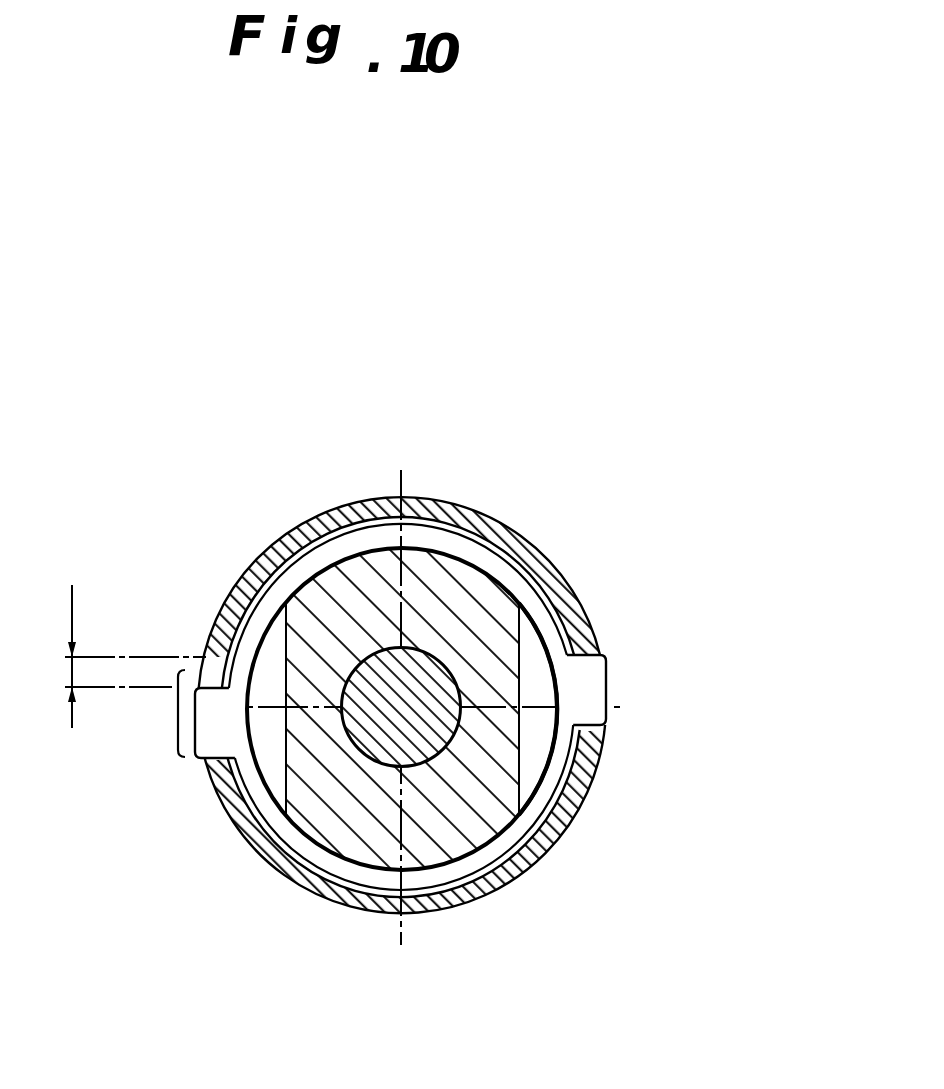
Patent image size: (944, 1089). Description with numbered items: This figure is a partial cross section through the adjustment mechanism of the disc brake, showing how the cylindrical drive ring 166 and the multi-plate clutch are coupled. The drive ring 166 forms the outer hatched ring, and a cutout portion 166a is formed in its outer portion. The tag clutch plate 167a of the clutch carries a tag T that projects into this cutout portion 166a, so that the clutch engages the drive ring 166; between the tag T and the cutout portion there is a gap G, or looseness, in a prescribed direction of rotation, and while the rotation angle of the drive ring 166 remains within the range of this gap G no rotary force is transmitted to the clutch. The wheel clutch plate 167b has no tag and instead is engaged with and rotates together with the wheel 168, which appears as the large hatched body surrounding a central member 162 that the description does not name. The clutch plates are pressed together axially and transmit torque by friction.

The shaft 162 is at (417, 682).
The drive ring 166 is at (510, 877).
The cutout portion 166a is at (135, 707).
The tag clutch plate 167a is at (528, 597).
The wheel clutch plate 167b is at (541, 682).
The wheel 168 is at (511, 762).
The tag T is at (216, 742).
The gap G is at (49, 656).